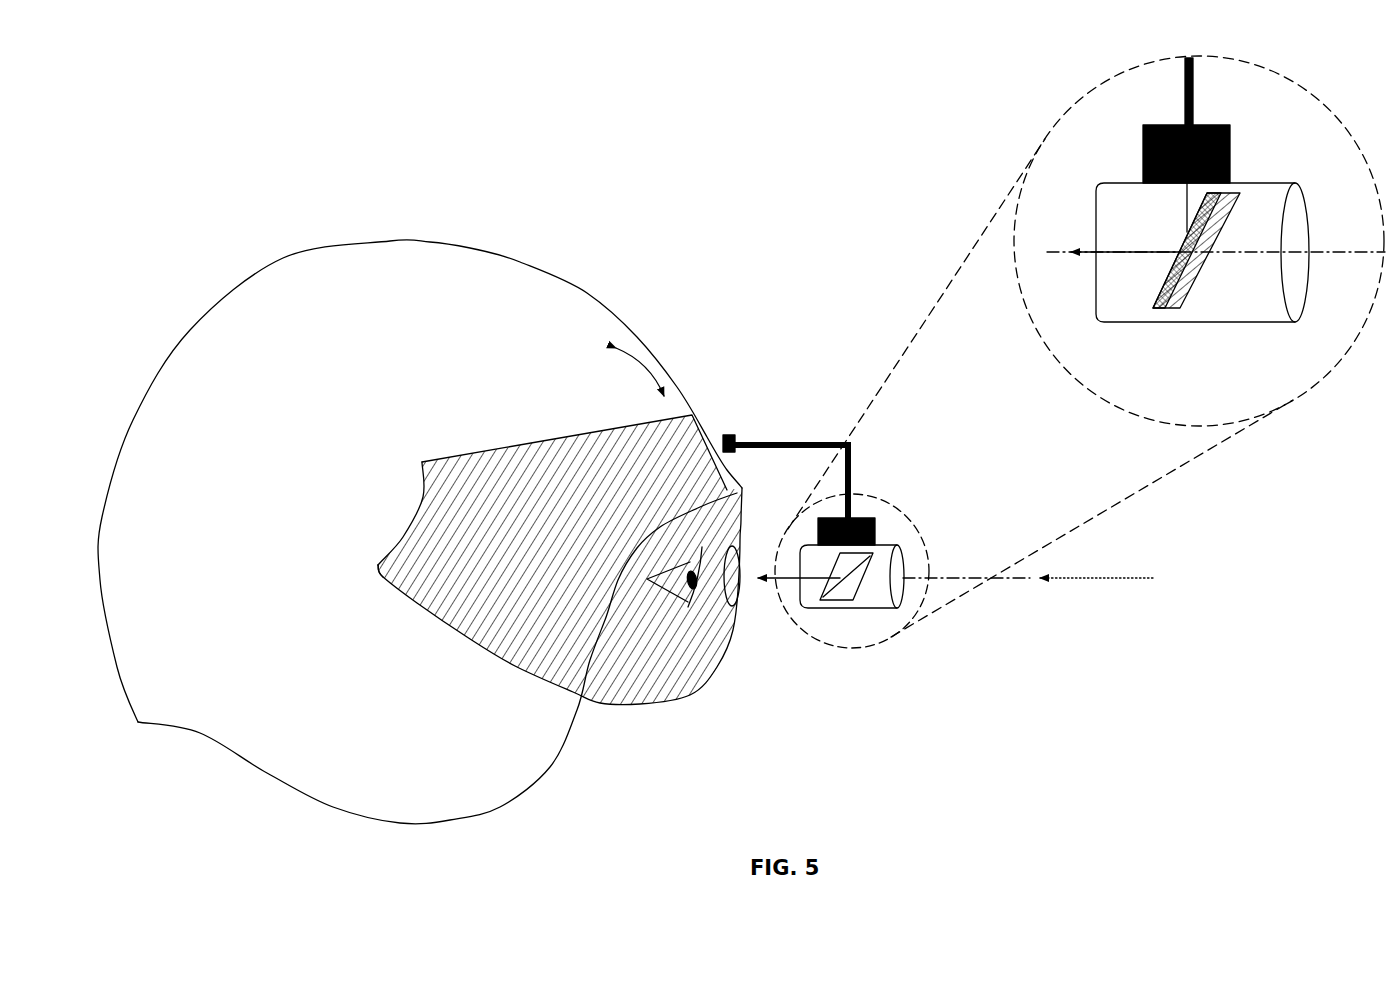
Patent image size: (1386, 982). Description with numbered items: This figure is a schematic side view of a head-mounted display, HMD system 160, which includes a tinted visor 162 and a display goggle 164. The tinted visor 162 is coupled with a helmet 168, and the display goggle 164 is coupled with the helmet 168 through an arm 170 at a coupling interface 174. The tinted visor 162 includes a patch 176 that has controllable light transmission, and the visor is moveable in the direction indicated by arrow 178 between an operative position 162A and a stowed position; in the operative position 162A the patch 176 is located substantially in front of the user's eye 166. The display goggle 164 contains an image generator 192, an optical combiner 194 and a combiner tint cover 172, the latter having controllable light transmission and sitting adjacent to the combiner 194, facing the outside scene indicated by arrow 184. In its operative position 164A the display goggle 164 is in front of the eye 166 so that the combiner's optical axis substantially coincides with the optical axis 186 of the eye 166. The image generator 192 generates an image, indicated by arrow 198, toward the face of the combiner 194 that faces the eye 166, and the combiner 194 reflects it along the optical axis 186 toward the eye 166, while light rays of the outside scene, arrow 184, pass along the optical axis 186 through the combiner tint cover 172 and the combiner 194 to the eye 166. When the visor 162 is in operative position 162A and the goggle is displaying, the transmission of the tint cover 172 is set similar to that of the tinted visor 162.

The HMD system 160 is at (771, 298).
The tinted visor 162 is at (397, 590).
The operative position of tinted visor 162A is at (468, 643).
The display goggle 164 is at (817, 608).
The operative position of display goggle 164A is at (872, 608).
The eye 166 is at (667, 607).
The helmet 168 is at (560, 753).
The arm 170 is at (793, 440).
The combiner tint cover 172 is at (1170, 313).
The coupling interface 174 is at (725, 433).
The patch 176 is at (743, 560).
The arrow indicating direction of visor movement 178 is at (647, 371).
The arrow indicating outside scene 184 is at (1130, 580).
The optical axis 186 is at (1010, 580).
The image generator 192 is at (1210, 127).
The optical combiner 194 is at (1160, 283).
The arrow indicating generated image 198 is at (1183, 195).